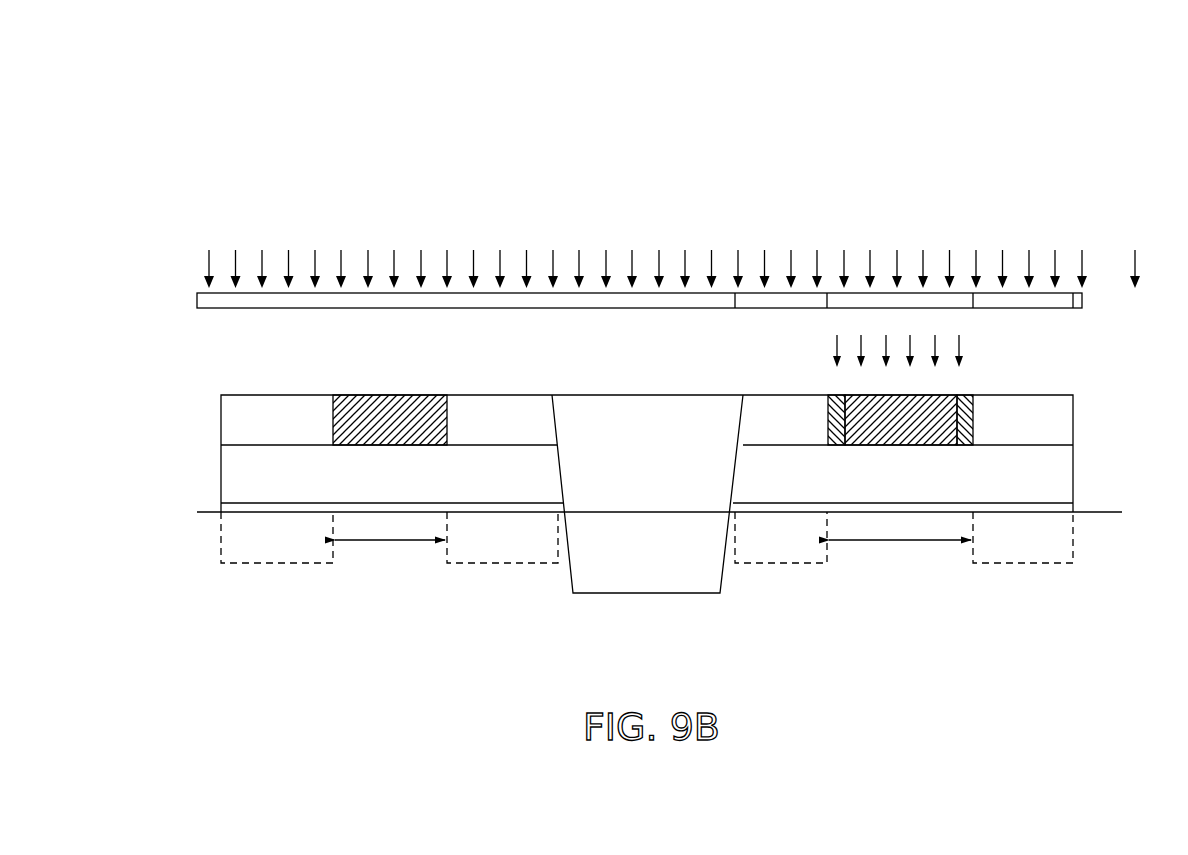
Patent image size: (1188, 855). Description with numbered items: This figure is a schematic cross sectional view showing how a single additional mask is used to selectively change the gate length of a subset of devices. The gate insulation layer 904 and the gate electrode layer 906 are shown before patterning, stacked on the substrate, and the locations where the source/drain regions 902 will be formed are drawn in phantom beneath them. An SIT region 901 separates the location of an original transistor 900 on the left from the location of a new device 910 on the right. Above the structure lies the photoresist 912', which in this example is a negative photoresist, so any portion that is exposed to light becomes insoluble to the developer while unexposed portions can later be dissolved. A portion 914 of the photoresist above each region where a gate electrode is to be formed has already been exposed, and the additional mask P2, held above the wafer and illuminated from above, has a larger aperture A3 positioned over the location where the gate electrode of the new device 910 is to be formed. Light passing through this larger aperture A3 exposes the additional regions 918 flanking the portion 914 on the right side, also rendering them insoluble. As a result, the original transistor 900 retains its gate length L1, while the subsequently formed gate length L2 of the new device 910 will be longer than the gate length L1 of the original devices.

The transistor 900 is at (421, 561).
The SIT region 901 is at (664, 497).
The source/drain regions 902 is at (299, 556).
The gate insulation layer 904 is at (317, 498).
The gate electrode layer 906 is at (415, 492).
The new device 910 is at (920, 556).
The photoresist 912' is at (686, 425).
The exposed portion of the photoresist 914 is at (417, 395).
The additional regions 918 is at (827, 413).
The aperture A3 is at (882, 293).
The additional mask P2 is at (1085, 301).
The gate length L1 is at (382, 541).
The gate length L2 is at (867, 541).